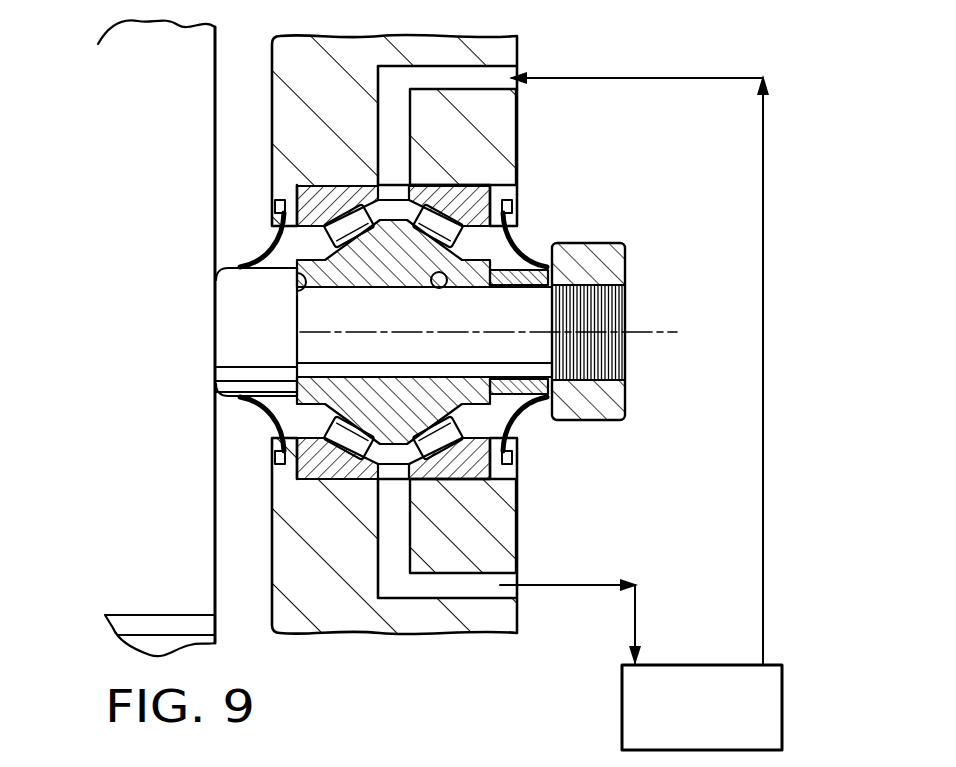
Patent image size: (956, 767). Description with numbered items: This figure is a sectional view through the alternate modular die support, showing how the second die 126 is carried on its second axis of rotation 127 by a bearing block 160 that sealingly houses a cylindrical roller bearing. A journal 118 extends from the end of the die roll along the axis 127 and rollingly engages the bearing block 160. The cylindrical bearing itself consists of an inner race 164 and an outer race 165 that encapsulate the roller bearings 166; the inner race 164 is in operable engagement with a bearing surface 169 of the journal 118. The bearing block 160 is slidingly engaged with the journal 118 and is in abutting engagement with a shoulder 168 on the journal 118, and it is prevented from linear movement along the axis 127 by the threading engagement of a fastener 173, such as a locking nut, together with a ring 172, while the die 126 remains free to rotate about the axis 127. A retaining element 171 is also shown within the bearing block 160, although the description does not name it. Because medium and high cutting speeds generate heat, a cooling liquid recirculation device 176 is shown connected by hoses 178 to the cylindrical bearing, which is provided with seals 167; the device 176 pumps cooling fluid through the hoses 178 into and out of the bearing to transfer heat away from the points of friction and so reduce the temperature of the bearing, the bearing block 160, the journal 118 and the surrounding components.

The second die 126 is at (146, 67).
The journal 118 is at (203, 360).
The bearing block 160 is at (512, 47).
The retainer ring 171 is at (520, 88).
The outer race 165 is at (297, 190).
The roller bearings 166 is at (347, 216).
The inner race 164 is at (353, 273).
The shoulder 168 is at (297, 297).
The bearing surface 169 is at (433, 287).
The seals 167 is at (513, 250).
The ring 172 is at (542, 266).
The fastener 173 is at (627, 256).
The second axis of rotation 127 is at (655, 333).
The hoses 178 is at (765, 554).
The cooling liquid recirculation device 176 is at (784, 707).